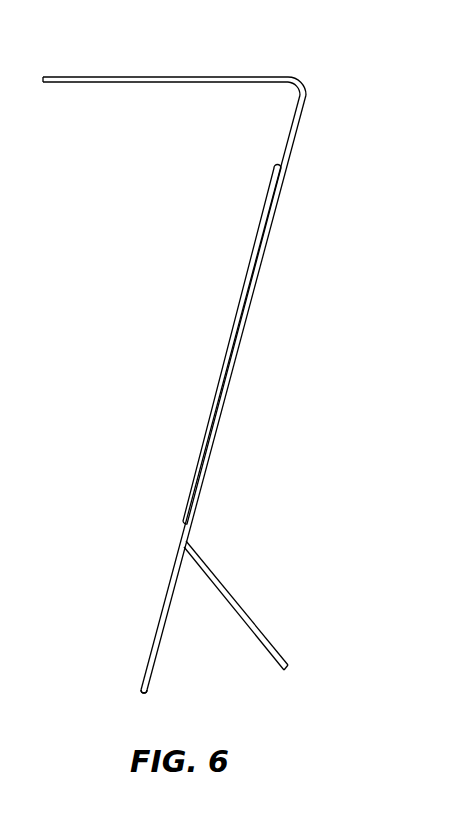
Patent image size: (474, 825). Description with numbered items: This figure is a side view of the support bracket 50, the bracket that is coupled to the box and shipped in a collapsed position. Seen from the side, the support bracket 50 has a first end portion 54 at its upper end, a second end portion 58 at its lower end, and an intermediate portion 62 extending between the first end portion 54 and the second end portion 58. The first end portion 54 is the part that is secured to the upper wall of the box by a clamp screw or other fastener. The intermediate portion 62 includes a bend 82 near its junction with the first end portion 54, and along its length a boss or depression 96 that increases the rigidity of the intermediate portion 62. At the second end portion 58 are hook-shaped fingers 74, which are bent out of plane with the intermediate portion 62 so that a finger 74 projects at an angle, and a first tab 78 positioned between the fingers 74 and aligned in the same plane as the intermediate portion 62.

The support bracket 50 is at (363, 70).
The first end portion 54 is at (79, 90).
The second end portion 58 is at (118, 662).
The intermediate portion 62 is at (251, 380).
The hook-shaped finger 74 is at (255, 623).
The first tab 78 is at (157, 655).
The bend 82 is at (301, 87).
The boss or depression 96 is at (241, 293).